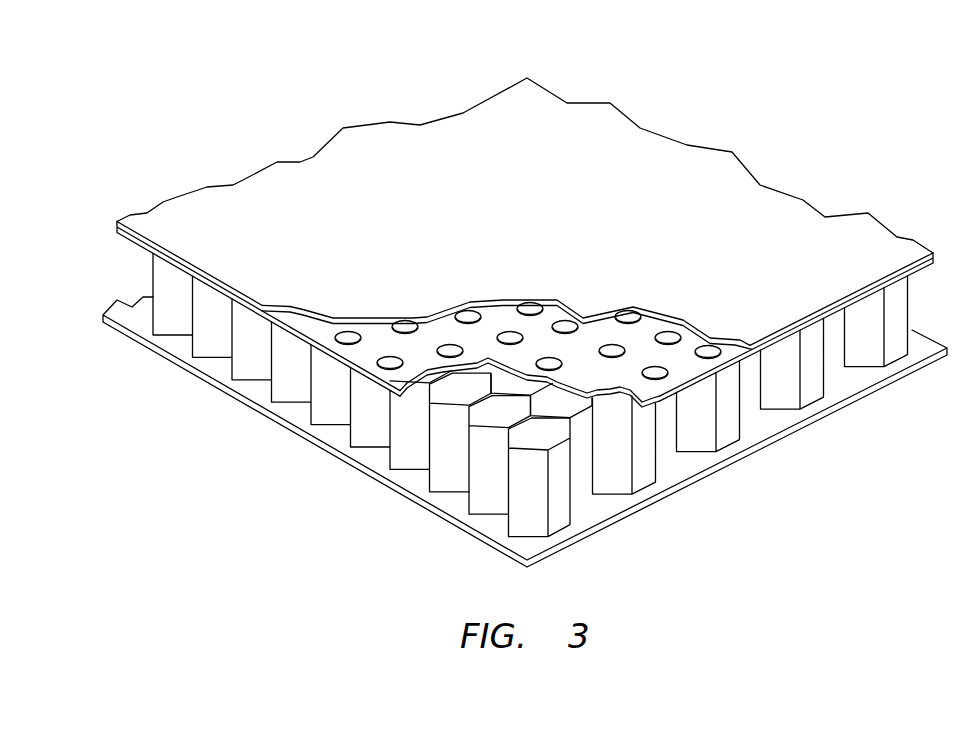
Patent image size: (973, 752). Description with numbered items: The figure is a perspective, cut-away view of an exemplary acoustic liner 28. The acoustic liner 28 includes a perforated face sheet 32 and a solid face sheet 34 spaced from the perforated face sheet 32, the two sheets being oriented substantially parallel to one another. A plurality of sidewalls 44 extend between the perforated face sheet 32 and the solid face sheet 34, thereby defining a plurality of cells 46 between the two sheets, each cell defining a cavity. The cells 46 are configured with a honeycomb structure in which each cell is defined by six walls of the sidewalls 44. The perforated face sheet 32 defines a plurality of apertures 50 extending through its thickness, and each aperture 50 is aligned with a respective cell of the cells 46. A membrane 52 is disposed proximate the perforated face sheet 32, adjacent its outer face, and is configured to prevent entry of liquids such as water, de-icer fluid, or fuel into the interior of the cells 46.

The acoustic liner 28 is at (537, 293).
The perforated face sheet 32 is at (705, 355).
The solid face sheet 34 is at (850, 383).
The sidewalls 44 is at (408, 427).
The cells 46 is at (547, 431).
The apertures 50 is at (348, 332).
The membrane 52 is at (767, 200).